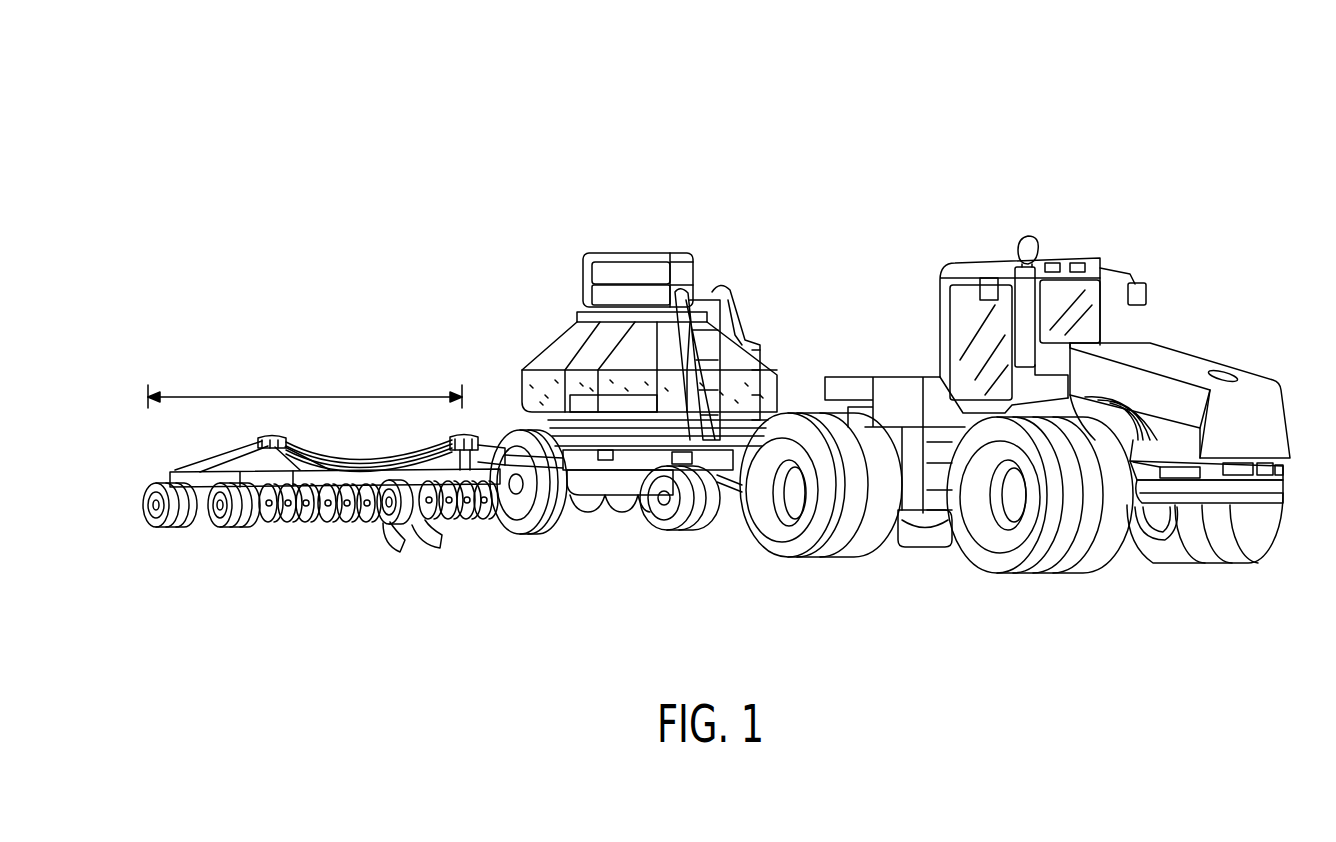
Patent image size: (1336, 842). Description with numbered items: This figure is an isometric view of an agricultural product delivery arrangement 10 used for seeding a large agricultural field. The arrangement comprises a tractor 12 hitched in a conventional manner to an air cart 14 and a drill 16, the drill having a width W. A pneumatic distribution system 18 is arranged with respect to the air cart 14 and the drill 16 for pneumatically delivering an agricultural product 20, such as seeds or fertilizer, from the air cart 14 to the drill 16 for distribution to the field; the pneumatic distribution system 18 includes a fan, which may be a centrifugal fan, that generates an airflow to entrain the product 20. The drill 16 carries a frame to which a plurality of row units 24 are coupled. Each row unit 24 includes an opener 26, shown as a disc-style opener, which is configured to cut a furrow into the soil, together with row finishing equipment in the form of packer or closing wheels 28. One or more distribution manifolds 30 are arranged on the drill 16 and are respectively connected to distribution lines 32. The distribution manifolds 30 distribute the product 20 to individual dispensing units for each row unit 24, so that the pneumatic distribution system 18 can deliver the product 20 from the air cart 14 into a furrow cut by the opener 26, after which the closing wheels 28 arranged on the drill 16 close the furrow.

The agricultural product delivery arrangement 10 is at (901, 205).
The tractor 12 is at (1234, 352).
The air cart 14 is at (776, 298).
The drill 16 is at (336, 340).
The pneumatic distribution system 18 is at (474, 410).
The agricultural product 20 is at (547, 385).
The row unit 24 is at (452, 530).
The opener 26 is at (455, 528).
The closing wheels 28 is at (390, 527).
The distribution manifold 30 is at (272, 438).
The distribution lines 32 is at (407, 440).